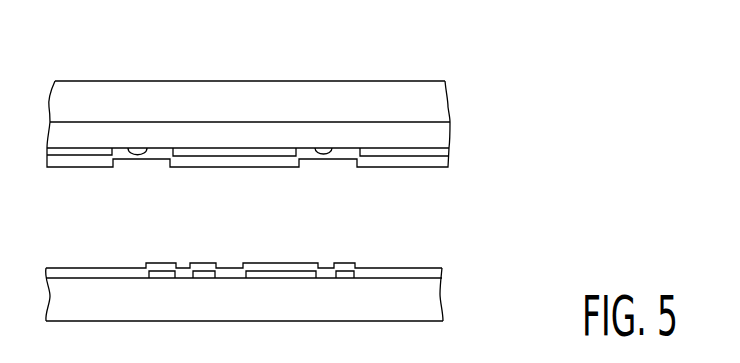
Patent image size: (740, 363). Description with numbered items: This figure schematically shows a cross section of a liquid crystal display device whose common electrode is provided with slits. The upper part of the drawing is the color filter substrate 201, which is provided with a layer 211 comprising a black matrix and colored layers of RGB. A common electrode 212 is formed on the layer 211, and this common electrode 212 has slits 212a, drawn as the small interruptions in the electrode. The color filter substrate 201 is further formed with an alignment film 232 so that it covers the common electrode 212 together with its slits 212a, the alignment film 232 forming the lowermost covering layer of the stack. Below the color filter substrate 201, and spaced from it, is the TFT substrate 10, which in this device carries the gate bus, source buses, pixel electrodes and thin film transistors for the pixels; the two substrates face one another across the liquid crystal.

The color filter substrate 201 is at (322, 114).
The layer comprising a black matrix and colored layers of RGB 211 is at (435, 136).
The common electrode 212 is at (437, 150).
The slits 212a is at (148, 148).
The alignment film 232 is at (430, 162).
The TFT substrate 10 is at (447, 265).